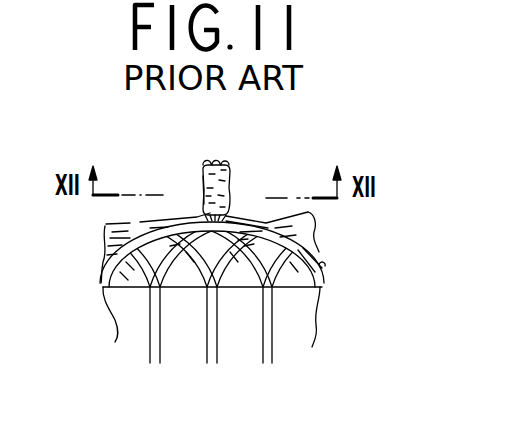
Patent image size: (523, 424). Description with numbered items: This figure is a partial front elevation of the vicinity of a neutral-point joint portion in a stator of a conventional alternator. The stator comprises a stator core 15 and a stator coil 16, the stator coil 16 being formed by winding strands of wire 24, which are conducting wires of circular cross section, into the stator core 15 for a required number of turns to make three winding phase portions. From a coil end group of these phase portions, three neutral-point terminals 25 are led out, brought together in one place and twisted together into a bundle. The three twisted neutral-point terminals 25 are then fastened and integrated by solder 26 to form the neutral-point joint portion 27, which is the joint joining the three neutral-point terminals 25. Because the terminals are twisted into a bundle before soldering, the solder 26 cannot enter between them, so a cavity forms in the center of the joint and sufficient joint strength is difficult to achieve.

The stator core 15 is at (322, 318).
The stator coil 16 is at (338, 254).
The strands of wire 24 is at (306, 255).
The neutral-point terminals 25 is at (226, 162).
The solder 26 is at (230, 178).
The neutral-point joint portion 27 is at (199, 179).